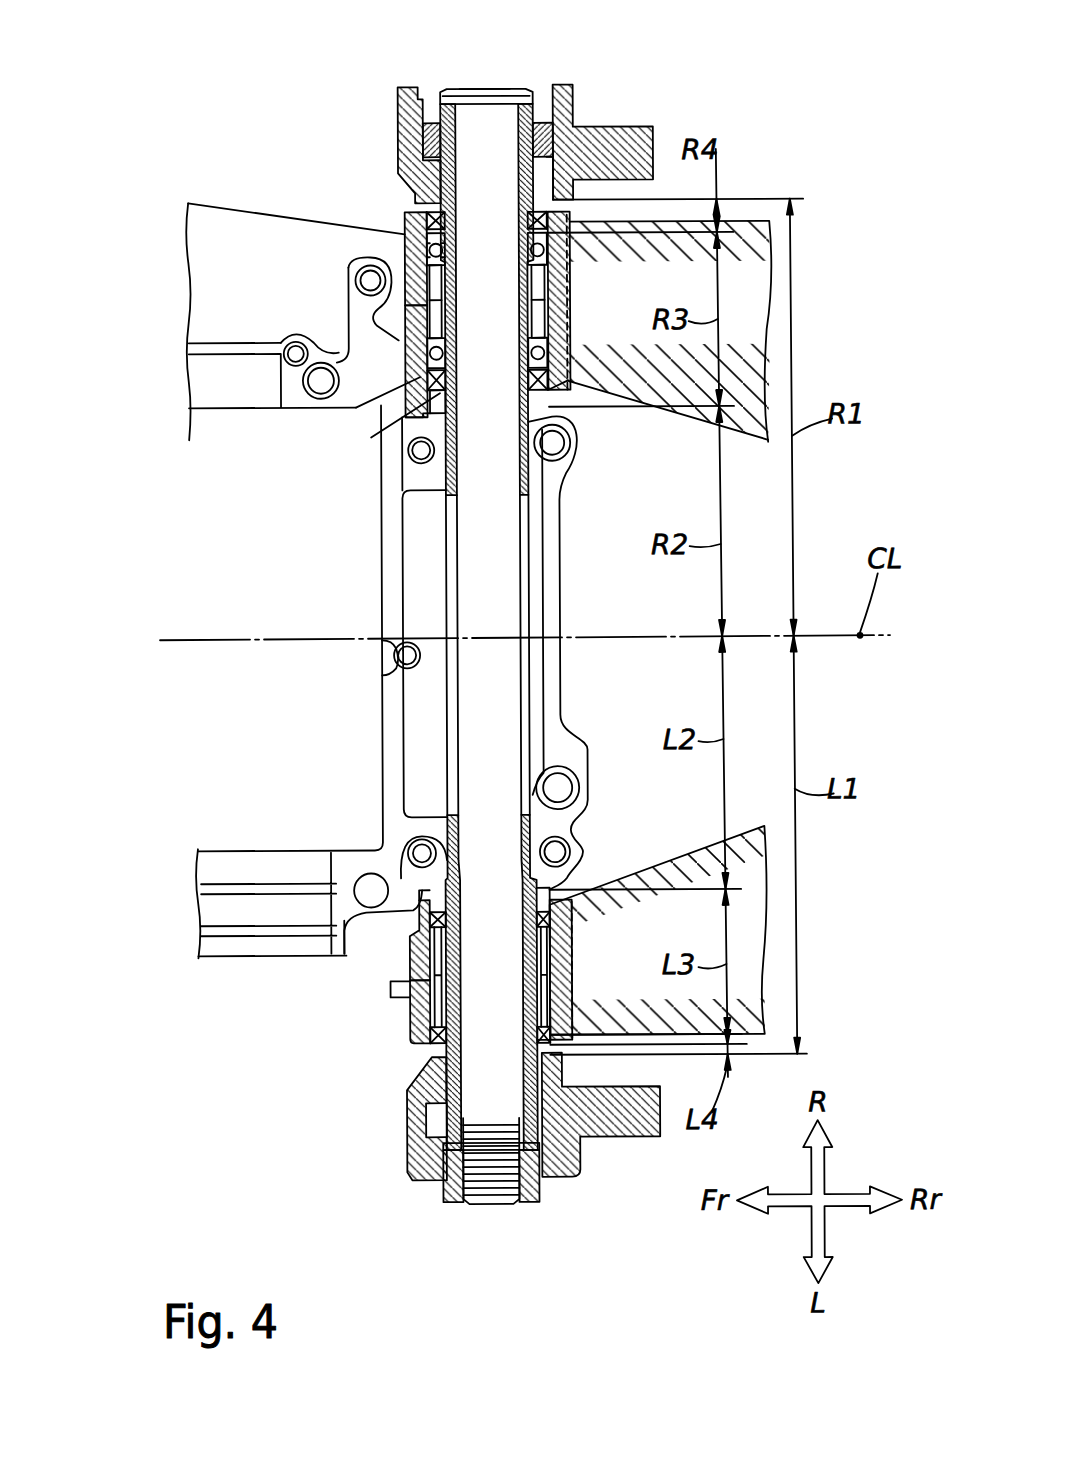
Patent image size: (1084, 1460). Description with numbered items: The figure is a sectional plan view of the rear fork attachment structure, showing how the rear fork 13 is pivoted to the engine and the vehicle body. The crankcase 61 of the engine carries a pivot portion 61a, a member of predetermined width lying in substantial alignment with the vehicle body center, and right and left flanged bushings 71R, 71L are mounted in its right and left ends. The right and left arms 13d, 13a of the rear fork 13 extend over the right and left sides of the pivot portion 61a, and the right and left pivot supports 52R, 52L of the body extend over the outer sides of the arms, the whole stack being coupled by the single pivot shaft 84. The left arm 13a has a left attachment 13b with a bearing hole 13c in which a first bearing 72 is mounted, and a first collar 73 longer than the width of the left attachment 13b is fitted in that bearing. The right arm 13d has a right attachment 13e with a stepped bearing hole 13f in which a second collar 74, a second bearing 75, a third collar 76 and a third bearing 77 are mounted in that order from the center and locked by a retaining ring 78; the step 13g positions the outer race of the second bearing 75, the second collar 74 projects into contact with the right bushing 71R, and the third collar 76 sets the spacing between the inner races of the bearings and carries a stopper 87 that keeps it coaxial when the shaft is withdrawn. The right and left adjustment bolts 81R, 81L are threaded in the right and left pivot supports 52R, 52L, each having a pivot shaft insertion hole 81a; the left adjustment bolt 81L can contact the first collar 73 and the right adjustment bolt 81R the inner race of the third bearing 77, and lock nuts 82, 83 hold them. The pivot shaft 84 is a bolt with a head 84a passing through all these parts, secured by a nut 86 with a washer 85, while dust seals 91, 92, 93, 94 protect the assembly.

The rear fork 13 is at (764, 912).
The left arm 13a is at (665, 880).
The left attachment 13b is at (418, 953).
The bearing hole 13c is at (408, 1034).
The right arm 13d is at (627, 372).
The right attachment 13e is at (413, 261).
The stepped bearing hole 13f is at (413, 318).
The step 13g is at (362, 420).
The right pivot support 52R is at (569, 88).
The left pivot support 52L is at (580, 1162).
The crankcase 61 is at (208, 962).
The pivot portion 61a is at (558, 660).
The right flanged bushing 71R is at (444, 497).
The left flanged bushing 71L is at (447, 812).
The first bearing 72 is at (461, 978).
The first collar 73 is at (461, 925).
The second collar 74 is at (458, 392).
The second bearing 75 is at (455, 363).
The third collar 76 is at (453, 307).
The third bearing 77 is at (457, 243).
The retaining ring 78 is at (432, 250).
The pivot shaft insertion hole 81a is at (455, 172).
The right adjustment bolt 81R is at (400, 147).
The left adjustment bolt 81L is at (404, 1090).
The lock nut 82 is at (405, 1122).
The lock nut 83 is at (400, 123).
The pivot shaft 84 is at (497, 88).
The head 84a is at (473, 89).
The washer 85 is at (428, 1100).
The nut 86 is at (452, 1184).
The stopper 87 is at (550, 282).
The dust seal 91 is at (409, 1042).
The dust seal 92 is at (412, 912).
The dust seal 93 is at (432, 392).
The dust seal 94 is at (432, 220).